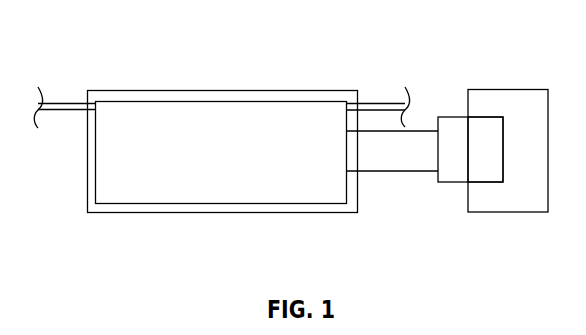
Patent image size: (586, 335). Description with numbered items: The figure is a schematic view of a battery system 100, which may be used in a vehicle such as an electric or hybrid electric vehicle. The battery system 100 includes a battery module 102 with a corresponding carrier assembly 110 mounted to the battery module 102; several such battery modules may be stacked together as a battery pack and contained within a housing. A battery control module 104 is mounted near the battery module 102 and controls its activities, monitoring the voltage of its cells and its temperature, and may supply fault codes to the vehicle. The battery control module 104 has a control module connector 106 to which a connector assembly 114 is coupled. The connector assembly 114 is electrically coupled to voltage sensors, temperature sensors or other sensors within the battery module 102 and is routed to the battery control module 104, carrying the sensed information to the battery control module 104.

The battery system 100 is at (311, 51).
The battery module 102 is at (248, 188).
The battery control module 104 is at (530, 212).
The control module connector 106 is at (493, 182).
The carrier assembly 110 is at (155, 87).
The connector assembly 114 is at (455, 182).